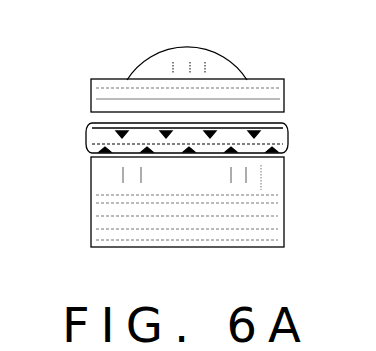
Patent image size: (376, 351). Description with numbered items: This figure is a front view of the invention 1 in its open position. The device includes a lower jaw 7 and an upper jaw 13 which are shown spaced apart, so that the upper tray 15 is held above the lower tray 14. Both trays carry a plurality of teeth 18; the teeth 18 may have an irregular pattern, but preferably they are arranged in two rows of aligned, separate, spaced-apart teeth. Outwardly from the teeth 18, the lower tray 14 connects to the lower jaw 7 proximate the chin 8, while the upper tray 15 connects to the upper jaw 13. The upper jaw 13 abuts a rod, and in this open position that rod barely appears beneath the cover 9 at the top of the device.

The invention 1 is at (88, 52).
The cover 9 is at (132, 93).
The upper jaw 13 is at (289, 131).
The upper tray 15 is at (278, 120).
The lower tray 14 is at (289, 152).
The teeth 18 is at (92, 137).
The lower jaw 7 is at (228, 236).
The chin 8 is at (246, 176).